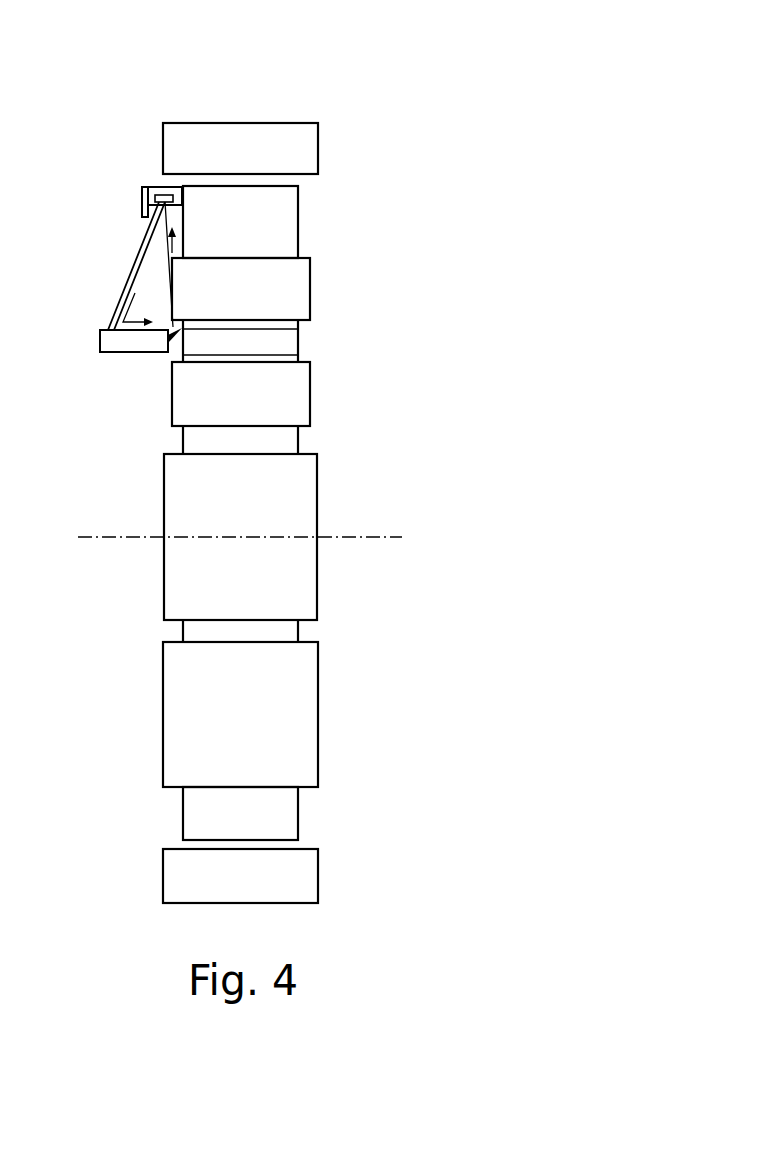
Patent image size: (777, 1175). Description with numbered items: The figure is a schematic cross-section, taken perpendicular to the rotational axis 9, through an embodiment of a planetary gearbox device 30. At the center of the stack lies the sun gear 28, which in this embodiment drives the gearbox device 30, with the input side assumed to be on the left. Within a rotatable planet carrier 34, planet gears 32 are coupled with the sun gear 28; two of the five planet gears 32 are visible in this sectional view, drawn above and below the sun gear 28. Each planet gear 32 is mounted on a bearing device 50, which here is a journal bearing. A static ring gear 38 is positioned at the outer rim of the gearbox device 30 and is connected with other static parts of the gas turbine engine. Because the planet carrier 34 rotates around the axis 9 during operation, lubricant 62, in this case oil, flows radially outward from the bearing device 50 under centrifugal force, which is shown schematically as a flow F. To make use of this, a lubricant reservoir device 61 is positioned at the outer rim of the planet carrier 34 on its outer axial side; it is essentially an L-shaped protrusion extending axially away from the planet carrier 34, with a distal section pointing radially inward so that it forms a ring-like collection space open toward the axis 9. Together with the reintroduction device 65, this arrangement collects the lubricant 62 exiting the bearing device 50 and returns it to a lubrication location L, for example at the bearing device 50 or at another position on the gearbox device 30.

The gearbox device 30 is at (348, 68).
The static ring gear 38 is at (307, 153).
The planet carrier 34 is at (287, 230).
The planet gear 32 is at (297, 293).
The bearing device 50 is at (307, 339).
The sun gear 28 is at (305, 577).
The rotational axis 9 is at (368, 535).
The lubricant reservoir device 61 is at (153, 188).
The lubricant 62 is at (173, 202).
The lubricant reintroduction device 65 is at (125, 277).
The lubricant flow F is at (168, 250).
The lubrication location L is at (173, 352).